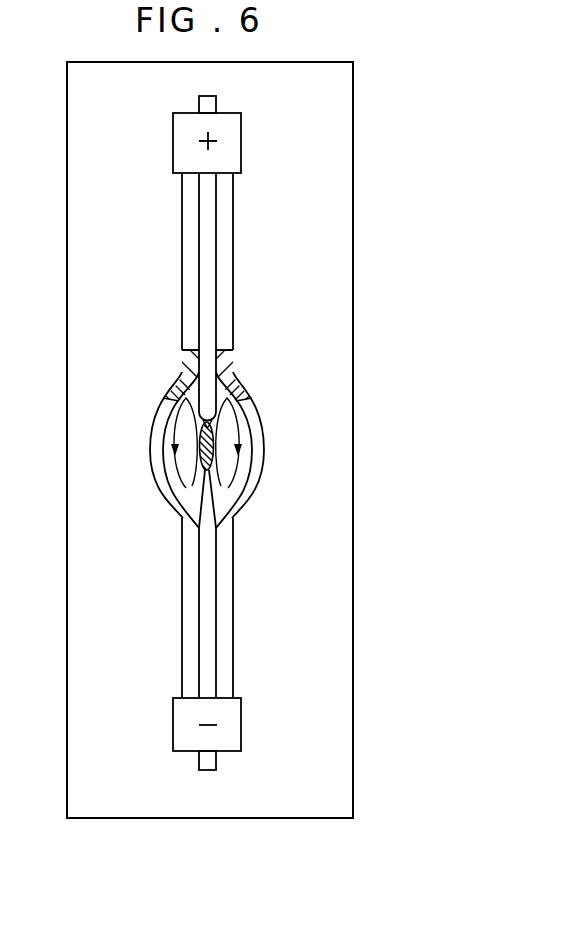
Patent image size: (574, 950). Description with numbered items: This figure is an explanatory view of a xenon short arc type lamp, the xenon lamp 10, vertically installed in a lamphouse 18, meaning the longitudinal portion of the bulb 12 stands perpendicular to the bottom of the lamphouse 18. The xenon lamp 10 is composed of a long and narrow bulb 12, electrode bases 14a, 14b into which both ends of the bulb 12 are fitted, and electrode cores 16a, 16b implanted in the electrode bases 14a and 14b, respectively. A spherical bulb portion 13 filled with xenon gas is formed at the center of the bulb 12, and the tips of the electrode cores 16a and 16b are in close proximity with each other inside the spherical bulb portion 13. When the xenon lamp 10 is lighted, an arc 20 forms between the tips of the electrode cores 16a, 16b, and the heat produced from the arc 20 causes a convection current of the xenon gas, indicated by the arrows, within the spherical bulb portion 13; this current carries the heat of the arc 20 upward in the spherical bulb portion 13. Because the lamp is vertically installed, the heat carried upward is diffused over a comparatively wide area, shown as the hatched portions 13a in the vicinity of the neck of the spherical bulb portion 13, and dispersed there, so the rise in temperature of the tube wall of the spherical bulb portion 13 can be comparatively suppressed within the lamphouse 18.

The xenon lamp 10 is at (257, 246).
The bulb 12 is at (233, 580).
The spherical bulb portion 13 is at (264, 455).
The hatched portions 13a is at (182, 365).
The electrode base 14a is at (243, 730).
The electrode base 14b is at (243, 124).
The electrode core 16a is at (198, 605).
The electrode core 16b is at (198, 262).
The lamphouse 18 is at (353, 450).
The arc 20 is at (201, 458).